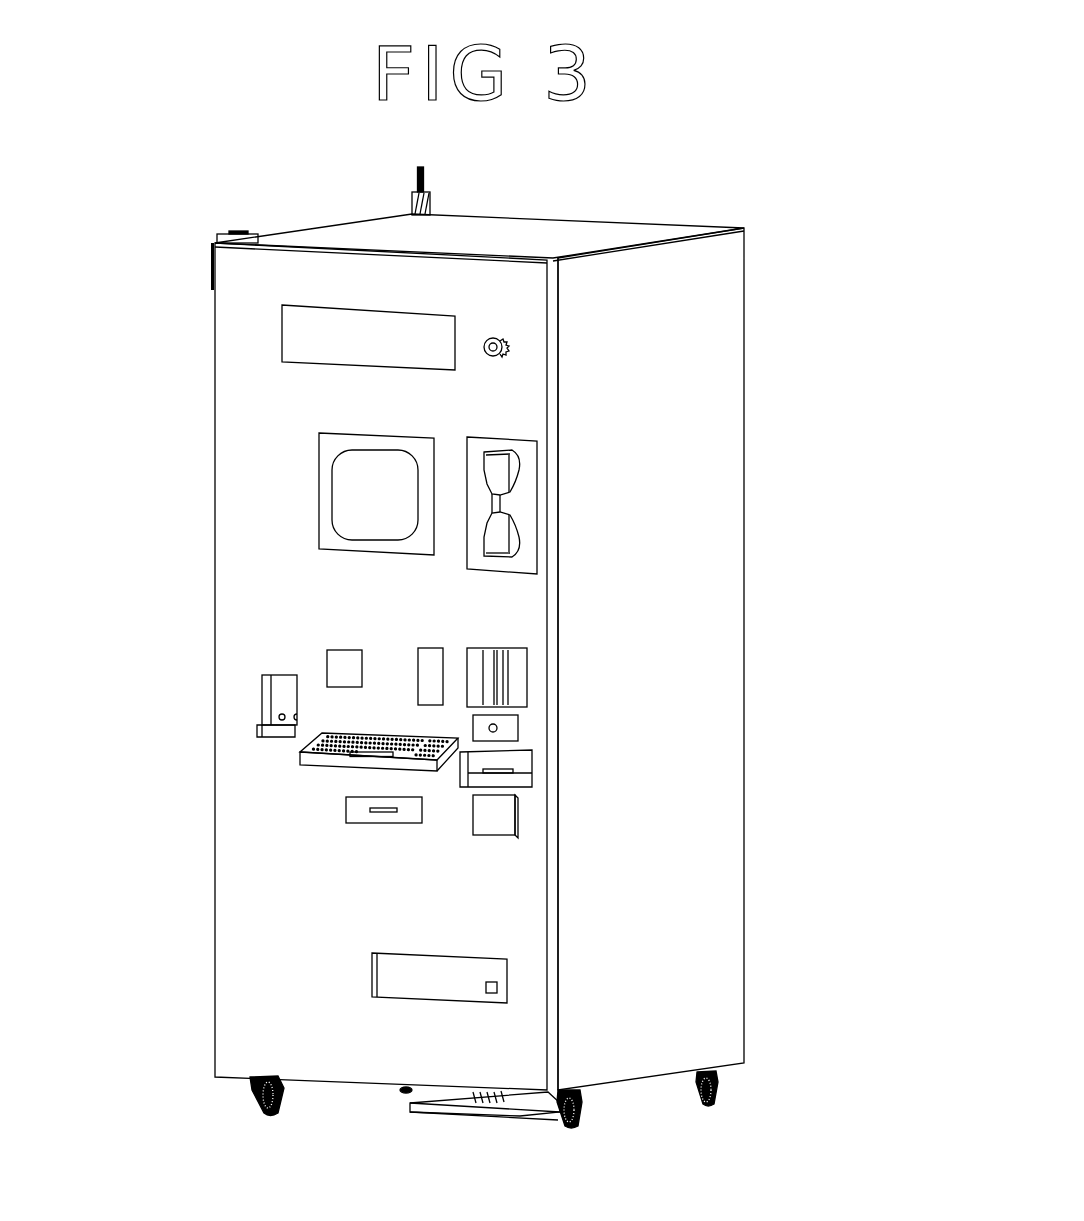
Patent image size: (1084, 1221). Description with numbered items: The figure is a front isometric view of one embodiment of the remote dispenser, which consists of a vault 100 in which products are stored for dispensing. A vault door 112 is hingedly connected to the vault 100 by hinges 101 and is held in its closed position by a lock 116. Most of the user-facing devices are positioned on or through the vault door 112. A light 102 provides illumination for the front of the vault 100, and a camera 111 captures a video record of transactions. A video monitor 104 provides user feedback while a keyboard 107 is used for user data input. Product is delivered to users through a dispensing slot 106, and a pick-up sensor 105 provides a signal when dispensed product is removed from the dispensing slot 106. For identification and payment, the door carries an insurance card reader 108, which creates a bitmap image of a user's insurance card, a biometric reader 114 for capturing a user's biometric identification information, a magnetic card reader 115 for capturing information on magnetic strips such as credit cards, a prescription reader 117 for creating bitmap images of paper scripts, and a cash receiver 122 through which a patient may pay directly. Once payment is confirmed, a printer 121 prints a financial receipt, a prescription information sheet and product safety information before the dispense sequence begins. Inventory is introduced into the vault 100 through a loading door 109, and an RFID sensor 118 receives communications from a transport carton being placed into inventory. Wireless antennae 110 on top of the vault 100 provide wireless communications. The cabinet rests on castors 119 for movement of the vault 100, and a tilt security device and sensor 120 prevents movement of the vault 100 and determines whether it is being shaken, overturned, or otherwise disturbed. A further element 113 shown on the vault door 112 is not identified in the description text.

The vault 100 is at (393, 238).
The hinges 101 is at (215, 238).
The light 102 is at (321, 333).
The video monitor 104 is at (335, 483).
The pick-up sensor 105 is at (278, 717).
The dispensing slot 106 is at (258, 727).
The keyboard 107 is at (300, 760).
The insurance card reader 108 is at (346, 819).
The loading door 109 is at (372, 977).
The wireless antennae 110 is at (430, 195).
The camera 111 is at (505, 350).
The vault door 112 is at (552, 425).
The eyeglass holder 113 is at (527, 498).
The biometric reader 114 is at (667, 648).
The magnetic card reader 115 is at (518, 677).
The lock 116 is at (510, 728).
The prescription reader 117 is at (518, 815).
The RFID sensor 118 is at (497, 988).
The castors 119 is at (720, 1093).
The tilt security device and sensor 120 is at (582, 1112).
The printer 121 is at (640, 841).
The cash receiver 122 is at (318, 643).